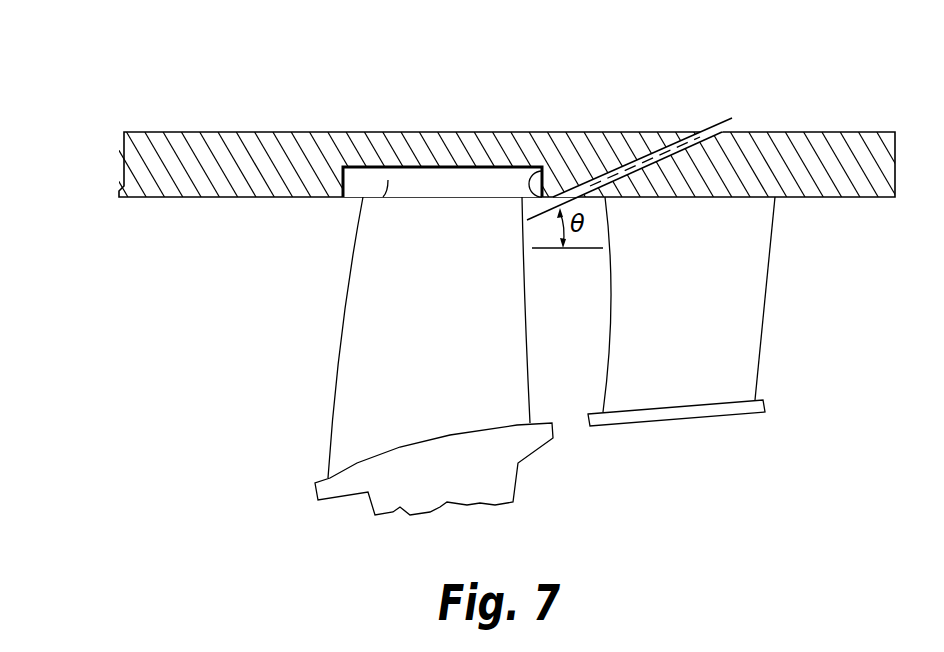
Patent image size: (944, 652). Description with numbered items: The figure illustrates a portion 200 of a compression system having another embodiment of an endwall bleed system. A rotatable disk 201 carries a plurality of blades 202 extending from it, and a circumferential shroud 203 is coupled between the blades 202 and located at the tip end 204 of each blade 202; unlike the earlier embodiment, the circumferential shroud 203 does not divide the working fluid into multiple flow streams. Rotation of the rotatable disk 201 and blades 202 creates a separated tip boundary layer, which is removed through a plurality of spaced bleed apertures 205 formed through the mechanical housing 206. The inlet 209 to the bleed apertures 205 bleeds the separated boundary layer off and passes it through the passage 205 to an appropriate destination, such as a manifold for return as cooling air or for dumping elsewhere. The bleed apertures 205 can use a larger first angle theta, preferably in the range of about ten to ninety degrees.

The portion of a compression system 200 is at (131, 253).
The rotatable disk 201 is at (497, 467).
The blades 202 is at (365, 305).
The circumferential shroud 203 is at (477, 180).
The tip end 204 is at (388, 180).
The bleed aperture 205 is at (685, 142).
The mechanical housing 206 is at (225, 153).
The inlet 209 is at (542, 170).